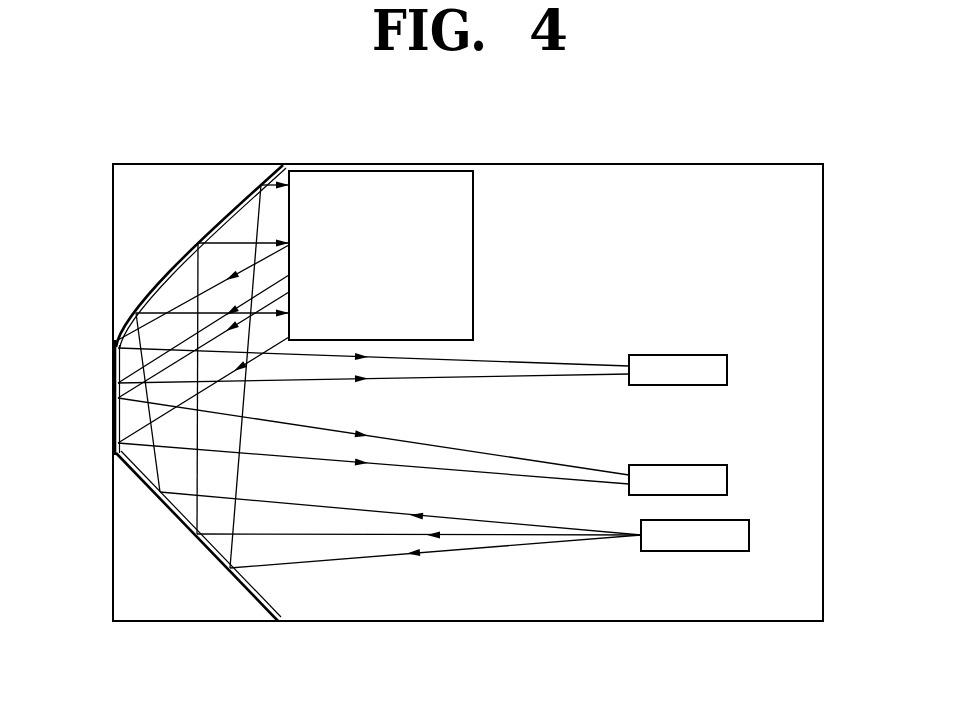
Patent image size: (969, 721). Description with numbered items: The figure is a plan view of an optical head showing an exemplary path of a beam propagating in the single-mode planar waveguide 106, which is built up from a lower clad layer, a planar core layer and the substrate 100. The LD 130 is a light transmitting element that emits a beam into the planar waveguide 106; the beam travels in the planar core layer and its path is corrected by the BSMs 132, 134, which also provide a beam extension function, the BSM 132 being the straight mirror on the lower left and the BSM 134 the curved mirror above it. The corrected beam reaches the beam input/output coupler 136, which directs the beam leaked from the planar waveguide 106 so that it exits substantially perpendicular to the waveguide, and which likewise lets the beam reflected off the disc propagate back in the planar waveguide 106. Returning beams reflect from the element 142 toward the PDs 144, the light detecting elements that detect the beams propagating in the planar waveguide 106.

The substrate 100 is at (132, 602).
The planar waveguide 106 is at (810, 213).
The LD 130 is at (749, 540).
The BSM 132 is at (230, 568).
The BSM 134 is at (207, 223).
The beam input/output coupler 136 is at (380, 183).
The flat reflecting mirror 142 is at (114, 390).
The PDs 144 is at (727, 372).